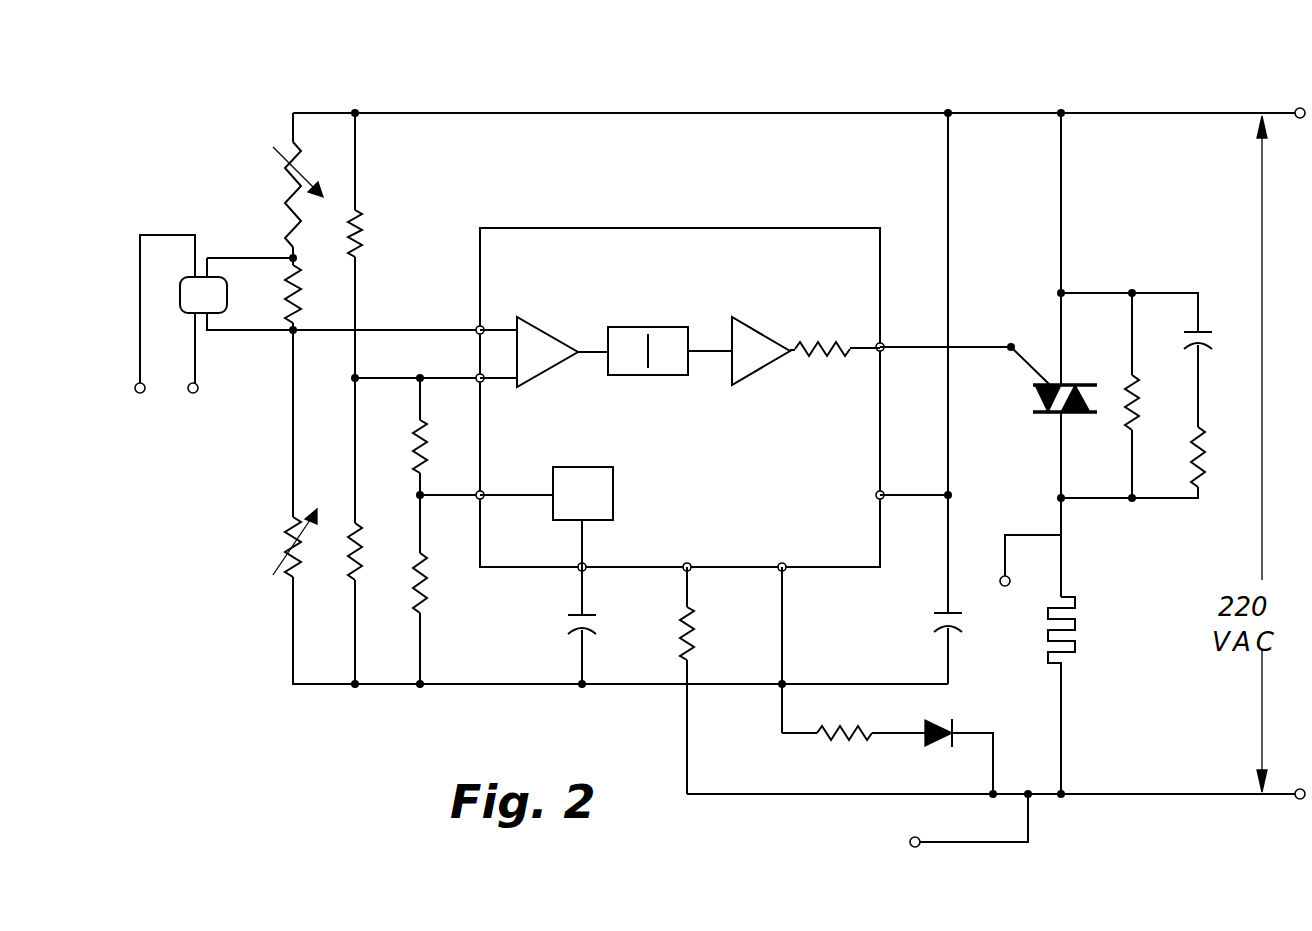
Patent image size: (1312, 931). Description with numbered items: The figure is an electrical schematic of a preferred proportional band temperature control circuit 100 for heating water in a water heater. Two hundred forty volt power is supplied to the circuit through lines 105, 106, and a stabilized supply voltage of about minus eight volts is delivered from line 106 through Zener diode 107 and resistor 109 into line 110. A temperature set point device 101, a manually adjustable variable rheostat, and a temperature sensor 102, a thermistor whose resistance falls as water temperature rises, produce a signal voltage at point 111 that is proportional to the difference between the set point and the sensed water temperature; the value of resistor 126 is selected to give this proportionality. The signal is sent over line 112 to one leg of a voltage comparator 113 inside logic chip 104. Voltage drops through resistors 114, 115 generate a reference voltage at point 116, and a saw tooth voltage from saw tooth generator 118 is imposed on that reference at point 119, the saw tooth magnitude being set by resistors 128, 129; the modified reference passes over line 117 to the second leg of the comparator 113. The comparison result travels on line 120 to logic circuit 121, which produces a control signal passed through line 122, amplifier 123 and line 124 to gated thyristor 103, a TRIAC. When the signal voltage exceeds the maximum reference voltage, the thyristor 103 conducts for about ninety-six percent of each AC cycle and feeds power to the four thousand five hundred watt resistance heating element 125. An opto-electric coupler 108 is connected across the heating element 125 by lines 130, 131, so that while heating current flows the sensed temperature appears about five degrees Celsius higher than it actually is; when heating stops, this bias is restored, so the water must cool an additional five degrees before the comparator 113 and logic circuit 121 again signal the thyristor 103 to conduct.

The proportional band temperature control circuit 100 is at (760, 113).
The temperature set point device 101 is at (284, 150).
The temperature sensor 102 is at (283, 540).
The gated thyristor 103 is at (1036, 396).
The logic chip 104 is at (685, 228).
The line 105 is at (1222, 112).
The line 106 is at (1152, 797).
The Zener diode 107 is at (939, 724).
The opto-electric coupler 108 is at (182, 293).
The resistor 109 is at (822, 733).
The line 110 is at (816, 681).
The point 111 is at (290, 334).
The line 112 is at (386, 326).
The voltage comparator 113 is at (526, 336).
The resistor 114 is at (358, 228).
The resistor 115 is at (345, 560).
The point 116 is at (347, 384).
The line 117 is at (442, 375).
The saw tooth generator 118 is at (591, 487).
The point 119 is at (423, 381).
The line 120 is at (590, 346).
The logic circuit 121 is at (653, 350).
The line 122 is at (742, 294).
The amplifier 123 is at (758, 356).
The line 124 is at (928, 332).
The resistance heating element 125 is at (1075, 633).
The resistor 126 is at (288, 214).
The resistor 128 is at (420, 450).
The resistor 129 is at (437, 596).
The line 130 is at (140, 277).
The line 131 is at (195, 350).